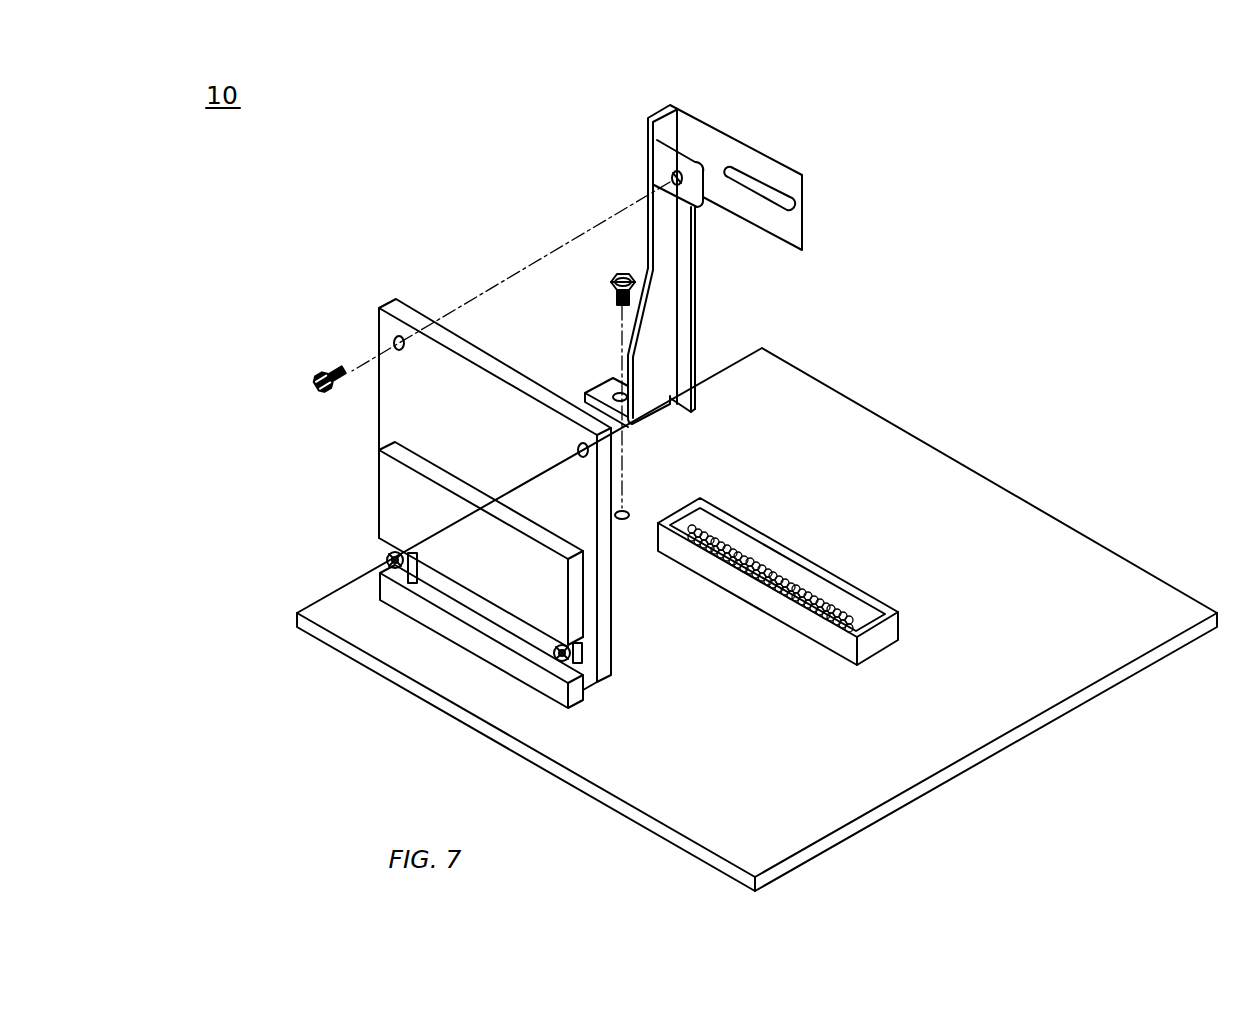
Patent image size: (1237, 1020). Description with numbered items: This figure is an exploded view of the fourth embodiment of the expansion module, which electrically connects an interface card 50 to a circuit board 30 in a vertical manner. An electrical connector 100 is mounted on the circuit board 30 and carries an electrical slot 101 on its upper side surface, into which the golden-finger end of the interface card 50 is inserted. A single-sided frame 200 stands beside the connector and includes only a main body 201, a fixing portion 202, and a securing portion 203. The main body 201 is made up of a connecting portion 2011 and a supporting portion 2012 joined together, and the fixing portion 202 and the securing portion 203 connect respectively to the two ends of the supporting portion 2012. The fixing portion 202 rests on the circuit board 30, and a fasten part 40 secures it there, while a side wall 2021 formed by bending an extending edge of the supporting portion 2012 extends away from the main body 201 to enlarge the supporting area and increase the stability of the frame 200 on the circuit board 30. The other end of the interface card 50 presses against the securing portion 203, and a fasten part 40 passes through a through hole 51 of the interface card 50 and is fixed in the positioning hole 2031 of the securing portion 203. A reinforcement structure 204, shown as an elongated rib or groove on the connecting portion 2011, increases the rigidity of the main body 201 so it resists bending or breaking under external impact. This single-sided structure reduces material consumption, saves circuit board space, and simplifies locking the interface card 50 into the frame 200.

The circuit board 30 is at (1153, 593).
The fasten part 40 is at (313, 387).
The interface card 50 is at (456, 503).
The through hole 51 is at (392, 342).
The electrical connector 100 is at (846, 673).
The electrical slot 101 is at (847, 637).
The frame 200 is at (728, 243).
The main body 201 is at (771, 231).
The connecting portion 2011 is at (760, 170).
The supporting portion 2012 is at (663, 212).
The fixing portion 202 is at (595, 395).
The side wall 2021 is at (652, 330).
The securing portion 203 is at (627, 158).
The positioning hole 2031 is at (670, 170).
The reinforcement structure 204 is at (793, 197).